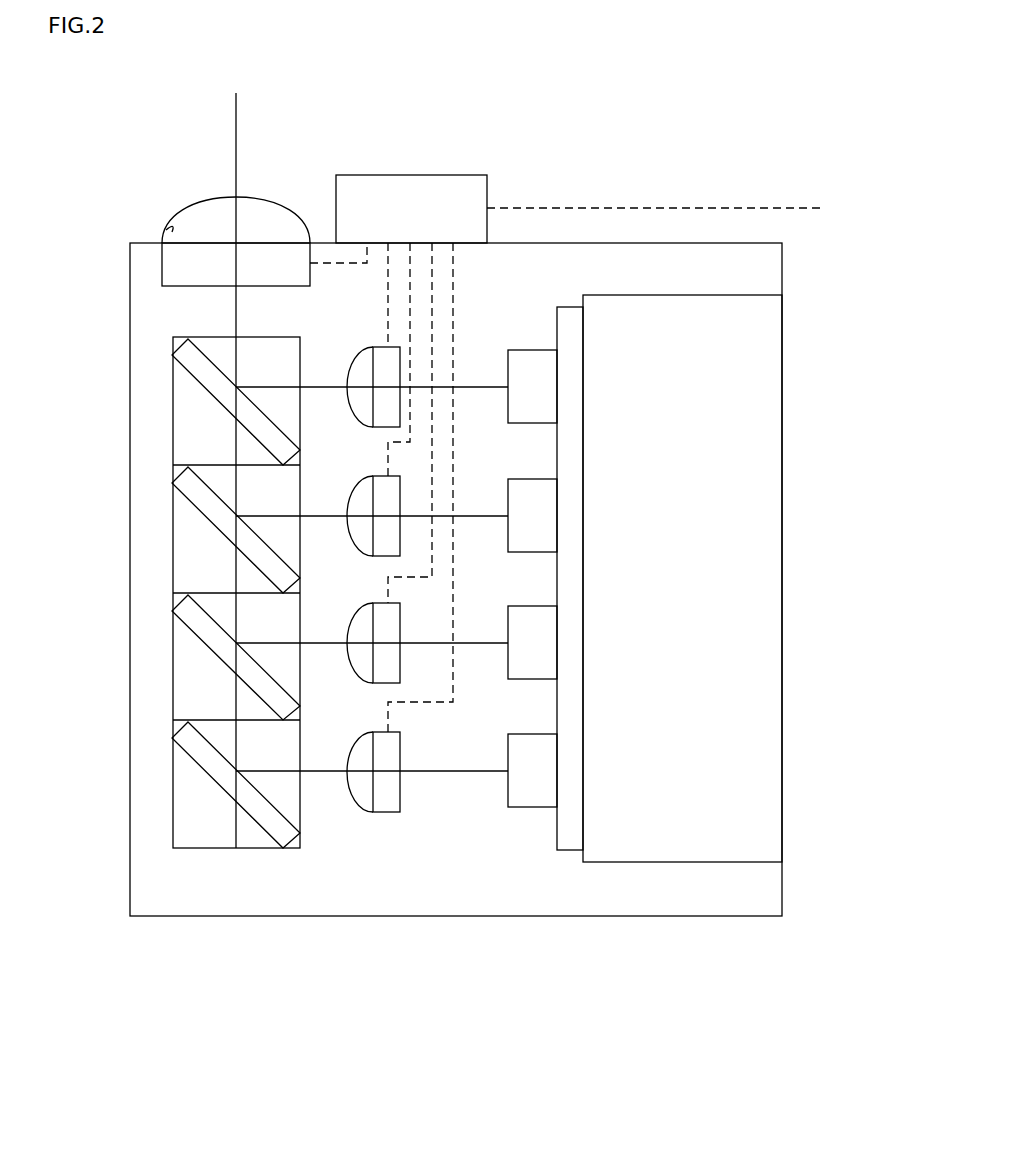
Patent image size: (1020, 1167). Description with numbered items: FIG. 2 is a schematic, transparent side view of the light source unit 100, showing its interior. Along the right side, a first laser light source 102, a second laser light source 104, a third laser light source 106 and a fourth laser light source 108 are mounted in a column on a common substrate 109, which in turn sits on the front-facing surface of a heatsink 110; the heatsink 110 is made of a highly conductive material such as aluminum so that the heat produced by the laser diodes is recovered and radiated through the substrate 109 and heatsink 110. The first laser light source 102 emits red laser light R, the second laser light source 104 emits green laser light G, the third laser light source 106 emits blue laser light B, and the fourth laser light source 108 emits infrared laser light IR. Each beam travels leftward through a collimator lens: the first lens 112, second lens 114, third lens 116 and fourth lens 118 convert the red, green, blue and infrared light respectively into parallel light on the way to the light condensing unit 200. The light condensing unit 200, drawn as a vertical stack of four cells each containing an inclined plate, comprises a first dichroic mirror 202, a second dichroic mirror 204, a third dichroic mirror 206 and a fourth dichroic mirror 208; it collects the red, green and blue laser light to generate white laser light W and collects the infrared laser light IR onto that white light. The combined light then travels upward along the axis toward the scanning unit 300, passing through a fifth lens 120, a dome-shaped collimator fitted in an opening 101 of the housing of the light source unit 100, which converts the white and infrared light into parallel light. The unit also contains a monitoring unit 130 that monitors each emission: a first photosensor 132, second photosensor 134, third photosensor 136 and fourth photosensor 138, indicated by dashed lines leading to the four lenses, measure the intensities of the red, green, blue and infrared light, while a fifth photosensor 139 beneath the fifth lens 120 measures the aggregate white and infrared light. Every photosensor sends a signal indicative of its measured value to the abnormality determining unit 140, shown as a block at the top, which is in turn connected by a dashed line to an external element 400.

The light source unit 100 is at (477, 1043).
The opening 101 is at (172, 225).
The first laser light source 102 is at (528, 350).
The second laser light source 104 is at (528, 479).
The third laser light source 106 is at (528, 606).
The fourth laser light source 108 is at (528, 734).
The substrate 109 is at (570, 307).
The heatsink 110 is at (778, 800).
The first lens 112 is at (358, 354).
The second lens 114 is at (358, 484).
The third lens 116 is at (360, 612).
The fourth lens 118 is at (362, 810).
The fifth lens 120 is at (200, 200).
The monitoring unit 130 is at (450, 158).
The first photosensor 132 is at (376, 342).
The second photosensor 134 is at (385, 558).
The third photosensor 136 is at (385, 685).
The fourth photosensor 138 is at (392, 814).
The fifth photosensor 139 is at (162, 268).
The abnormality determining unit 140 is at (487, 190).
The light condensing unit 200 is at (226, 866).
The first dichroic mirror 202 is at (195, 380).
The second dichroic mirror 204 is at (200, 512).
The third dichroic mirror 206 is at (200, 640).
The fourth dichroic mirror 208 is at (200, 767).
The scanning unit 300 is at (248, 97).
The external control device 400 is at (820, 205).